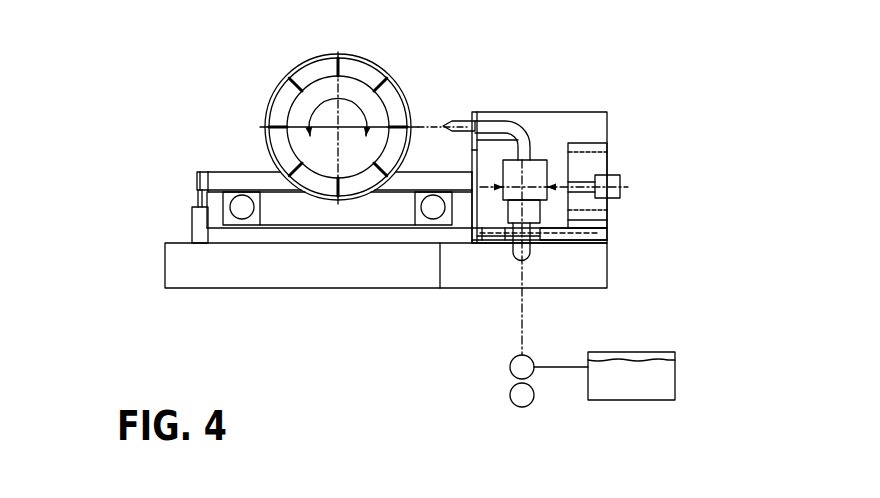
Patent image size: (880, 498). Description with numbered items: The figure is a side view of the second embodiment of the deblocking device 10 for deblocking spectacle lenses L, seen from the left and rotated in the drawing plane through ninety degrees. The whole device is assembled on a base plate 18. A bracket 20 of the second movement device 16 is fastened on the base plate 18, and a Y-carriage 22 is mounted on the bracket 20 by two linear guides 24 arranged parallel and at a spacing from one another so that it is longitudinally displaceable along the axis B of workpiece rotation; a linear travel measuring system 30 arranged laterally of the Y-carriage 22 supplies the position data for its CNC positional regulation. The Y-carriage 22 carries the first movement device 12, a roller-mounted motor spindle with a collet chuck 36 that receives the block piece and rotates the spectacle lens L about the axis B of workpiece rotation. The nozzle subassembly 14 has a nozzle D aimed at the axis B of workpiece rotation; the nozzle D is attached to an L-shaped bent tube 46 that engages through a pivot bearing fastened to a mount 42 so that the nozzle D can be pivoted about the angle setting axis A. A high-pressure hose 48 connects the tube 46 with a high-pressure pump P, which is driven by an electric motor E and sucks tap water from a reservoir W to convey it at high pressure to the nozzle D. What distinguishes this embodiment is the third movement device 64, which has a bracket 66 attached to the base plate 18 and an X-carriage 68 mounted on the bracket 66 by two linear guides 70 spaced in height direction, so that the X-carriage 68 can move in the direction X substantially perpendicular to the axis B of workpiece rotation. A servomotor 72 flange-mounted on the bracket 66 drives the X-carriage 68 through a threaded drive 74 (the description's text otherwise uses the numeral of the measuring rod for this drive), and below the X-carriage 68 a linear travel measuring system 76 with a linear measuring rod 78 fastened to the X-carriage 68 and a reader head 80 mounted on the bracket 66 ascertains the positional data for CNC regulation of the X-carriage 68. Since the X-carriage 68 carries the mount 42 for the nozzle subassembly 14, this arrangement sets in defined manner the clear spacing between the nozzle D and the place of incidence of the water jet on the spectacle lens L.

The deblocking device 10 is at (571, 181).
The first movement device 12 is at (346, 114).
The nozzle subassembly 14 is at (504, 120).
The second movement device 16 is at (252, 177).
The base plate 18 is at (212, 277).
The bracket 20 is at (358, 237).
The Y-carriage 22 is at (228, 182).
The linear guides 24 is at (242, 224).
The linear travel measuring system 30 is at (194, 182).
The collet chuck 36 is at (360, 75).
The mount 42 is at (545, 179).
The tube 46 is at (492, 120).
The high-pressure hose 48 is at (518, 262).
The third movement device 64 is at (558, 152).
The bracket 66 is at (572, 125).
The X-carriage 68 is at (555, 200).
The linear guides 70 is at (601, 153).
The servomotor 72 is at (617, 178).
The connector 74 is at (580, 190).
The linear travel measuring system 76 is at (559, 237).
The linear measuring rod 78 is at (482, 232).
The reader head 80 is at (505, 232).
The angle setting axis A is at (551, 225).
The axis of workpiece rotation B is at (307, 113).
The nozzle D is at (472, 127).
The spectacle lens L is at (370, 110).
The X direction X is at (548, 212).
The high-pressure pump P is at (515, 358).
The electric motor E is at (515, 403).
The reservoir W is at (623, 385).